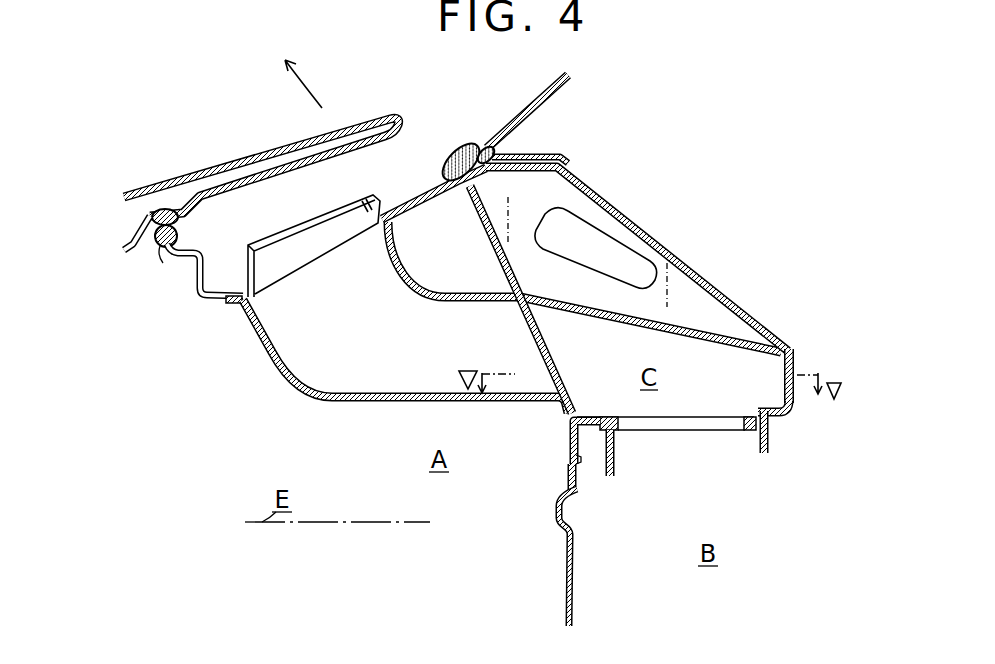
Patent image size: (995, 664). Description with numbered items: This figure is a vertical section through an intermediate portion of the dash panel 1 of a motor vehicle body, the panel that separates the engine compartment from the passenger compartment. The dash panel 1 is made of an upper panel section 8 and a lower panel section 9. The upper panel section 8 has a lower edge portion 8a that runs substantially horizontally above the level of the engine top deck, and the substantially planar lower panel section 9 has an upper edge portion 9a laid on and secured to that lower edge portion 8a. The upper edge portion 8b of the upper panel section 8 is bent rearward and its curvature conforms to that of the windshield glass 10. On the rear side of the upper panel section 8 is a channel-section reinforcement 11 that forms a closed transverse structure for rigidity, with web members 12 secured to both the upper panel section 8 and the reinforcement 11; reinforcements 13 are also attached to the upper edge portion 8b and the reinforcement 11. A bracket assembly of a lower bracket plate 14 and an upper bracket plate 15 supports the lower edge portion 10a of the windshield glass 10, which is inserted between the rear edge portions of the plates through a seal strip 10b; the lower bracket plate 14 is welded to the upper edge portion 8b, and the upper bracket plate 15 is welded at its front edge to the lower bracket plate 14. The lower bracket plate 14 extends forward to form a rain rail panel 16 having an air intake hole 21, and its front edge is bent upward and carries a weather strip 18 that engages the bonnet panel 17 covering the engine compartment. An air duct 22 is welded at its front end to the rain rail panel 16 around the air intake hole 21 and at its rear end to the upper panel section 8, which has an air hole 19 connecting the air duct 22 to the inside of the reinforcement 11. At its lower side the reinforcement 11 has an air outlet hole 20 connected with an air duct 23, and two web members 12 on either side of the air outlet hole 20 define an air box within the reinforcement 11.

The dash panel 1 is at (588, 579).
The upper panel section 8 is at (570, 430).
The lower edge portion 8a is at (568, 475).
The upper edge portion 8b is at (544, 158).
The lower panel section 9 is at (567, 557).
The upper edge portion 9a is at (580, 477).
The windshield glass 10 is at (538, 102).
The lower edge portion 10a is at (487, 143).
The seal strip 10b is at (458, 146).
The reinforcement 11 is at (788, 404).
The web members 12 is at (760, 382).
The reinforcements 13 is at (757, 318).
The lower bracket plate 14 is at (423, 210).
The upper bracket plate 15 is at (413, 200).
The rain rail panel 16 is at (203, 300).
The bonnet panel 17 is at (190, 173).
The weather strip 18 is at (167, 250).
The air hole 19 is at (532, 331).
The air outlet hole 20 is at (685, 422).
The air intake hole 21 is at (318, 233).
The air duct 22 is at (354, 400).
The air duct 23 is at (770, 440).